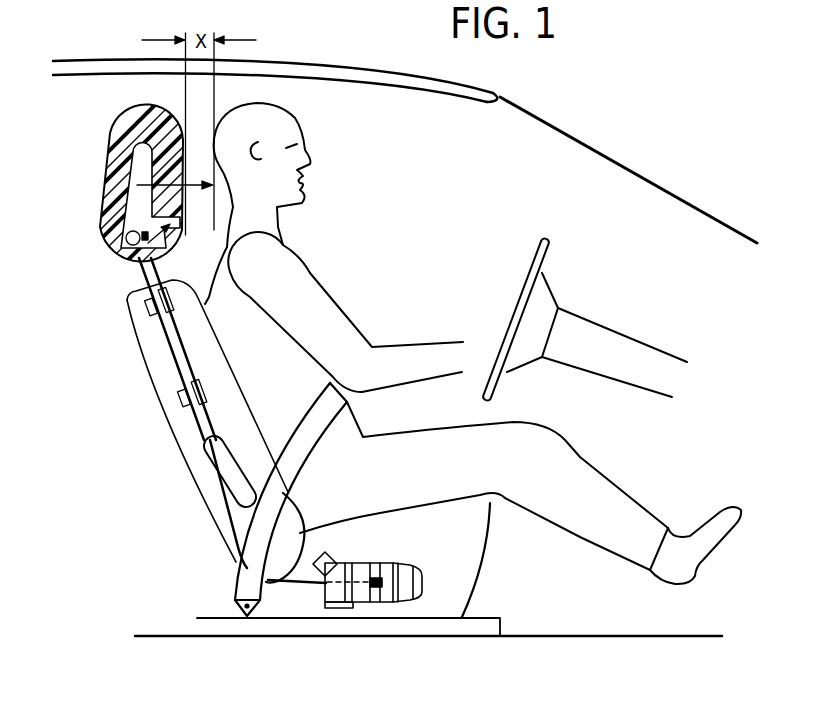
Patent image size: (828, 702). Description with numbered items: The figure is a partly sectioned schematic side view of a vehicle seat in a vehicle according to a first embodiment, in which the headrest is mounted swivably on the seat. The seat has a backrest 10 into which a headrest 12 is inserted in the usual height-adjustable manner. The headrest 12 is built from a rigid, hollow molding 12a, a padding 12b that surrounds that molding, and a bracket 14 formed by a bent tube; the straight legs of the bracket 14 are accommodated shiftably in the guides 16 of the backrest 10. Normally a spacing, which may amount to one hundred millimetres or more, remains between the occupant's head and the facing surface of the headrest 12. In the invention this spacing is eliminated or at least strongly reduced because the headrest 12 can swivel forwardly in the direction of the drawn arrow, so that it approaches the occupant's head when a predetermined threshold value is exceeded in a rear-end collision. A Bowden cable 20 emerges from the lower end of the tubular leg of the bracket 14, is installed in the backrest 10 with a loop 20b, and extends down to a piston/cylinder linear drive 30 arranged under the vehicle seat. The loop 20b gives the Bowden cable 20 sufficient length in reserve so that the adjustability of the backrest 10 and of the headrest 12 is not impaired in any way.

The backrest 10 is at (157, 363).
The headrest 12 is at (100, 157).
The rigid, hollow molding 12a is at (122, 207).
The padding 12b is at (126, 127).
The bracket 14 is at (140, 267).
The guides 16 is at (146, 316).
The Bowden cable 20 is at (207, 433).
The loop 20b is at (225, 482).
The piston/cylinder linear drive 30 is at (380, 606).